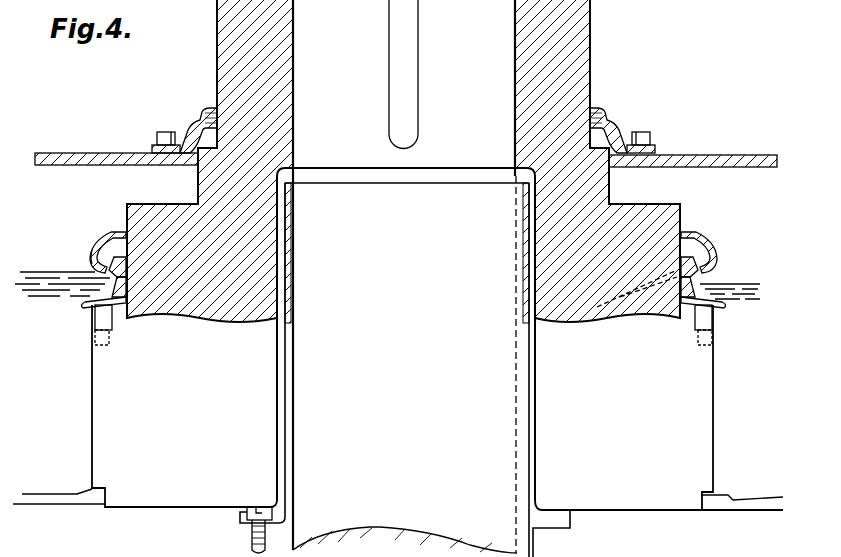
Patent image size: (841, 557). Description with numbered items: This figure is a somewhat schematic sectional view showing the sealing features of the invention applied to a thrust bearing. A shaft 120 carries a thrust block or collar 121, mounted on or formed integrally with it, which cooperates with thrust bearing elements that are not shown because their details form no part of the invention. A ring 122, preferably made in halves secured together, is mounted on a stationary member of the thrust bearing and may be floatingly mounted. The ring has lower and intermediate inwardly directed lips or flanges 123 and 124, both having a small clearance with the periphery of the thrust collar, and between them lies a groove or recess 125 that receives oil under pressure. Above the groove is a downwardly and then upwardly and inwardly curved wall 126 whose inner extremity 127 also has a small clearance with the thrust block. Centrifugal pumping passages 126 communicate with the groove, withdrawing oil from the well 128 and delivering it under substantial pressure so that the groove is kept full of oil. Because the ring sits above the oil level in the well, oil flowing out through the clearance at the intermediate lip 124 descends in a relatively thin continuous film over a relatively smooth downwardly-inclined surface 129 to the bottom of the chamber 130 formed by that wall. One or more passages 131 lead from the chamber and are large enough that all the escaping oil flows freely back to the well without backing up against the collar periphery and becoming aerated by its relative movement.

The shaft 120 is at (497, 450).
The thrust block or collar 121 is at (578, 74).
The ring 122 is at (708, 300).
The lower inwardly directed lip or flange 123 is at (112, 304).
The intermediate inwardly directed lip or flange 124 is at (128, 258).
The groove or recess 125 is at (124, 264).
The curved wall 126 is at (100, 240).
The inner extremity of curved wall 127 is at (118, 232).
The oil well 128 is at (745, 284).
The downwardly-inclined surface 129 is at (696, 236).
The chamber 130 is at (703, 258).
The passages 131 is at (714, 274).